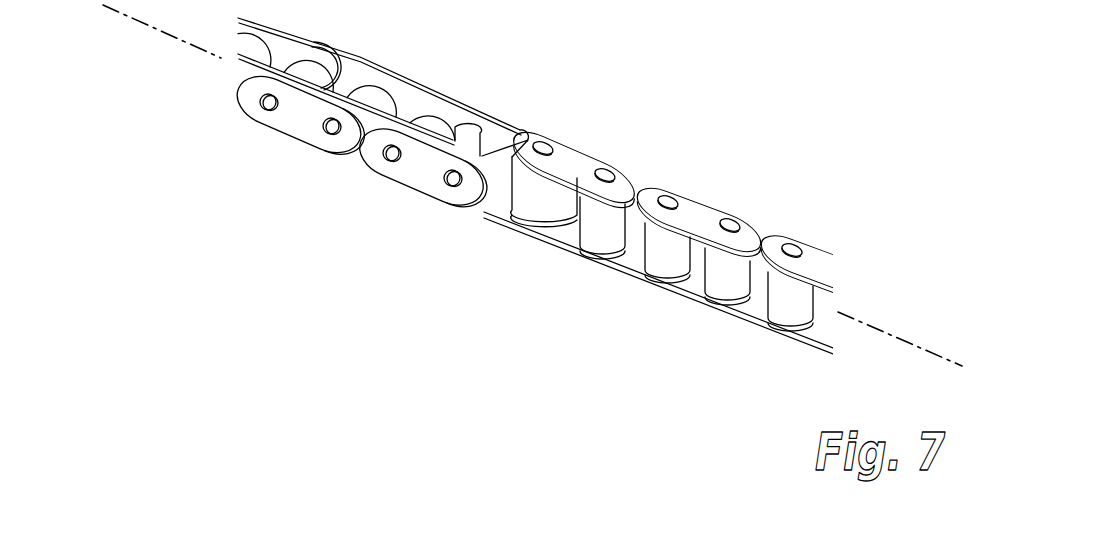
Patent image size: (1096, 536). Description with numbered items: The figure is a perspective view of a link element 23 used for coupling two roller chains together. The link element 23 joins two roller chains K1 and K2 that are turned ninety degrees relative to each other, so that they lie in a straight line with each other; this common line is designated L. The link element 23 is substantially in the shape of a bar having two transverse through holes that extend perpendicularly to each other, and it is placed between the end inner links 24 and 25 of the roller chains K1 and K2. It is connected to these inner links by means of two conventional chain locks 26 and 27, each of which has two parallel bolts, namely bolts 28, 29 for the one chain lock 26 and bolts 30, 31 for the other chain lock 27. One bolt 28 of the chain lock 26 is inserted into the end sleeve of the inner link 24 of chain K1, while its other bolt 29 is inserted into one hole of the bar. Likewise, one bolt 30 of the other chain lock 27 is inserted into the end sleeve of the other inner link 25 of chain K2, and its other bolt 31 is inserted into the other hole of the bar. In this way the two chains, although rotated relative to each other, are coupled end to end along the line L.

The link element 23 is at (480, 140).
The end inner link 24 is at (413, 86).
The end inner link 25 is at (632, 256).
The chain lock 26 is at (399, 197).
The chain lock 27 is at (594, 137).
The bolt 28 is at (383, 156).
The bolt 29 is at (453, 188).
The bolt 30 is at (611, 173).
The bolt 31 is at (544, 147).
The roller chain K1 is at (378, 110).
The roller chain K2 is at (684, 223).
The line L is at (872, 326).